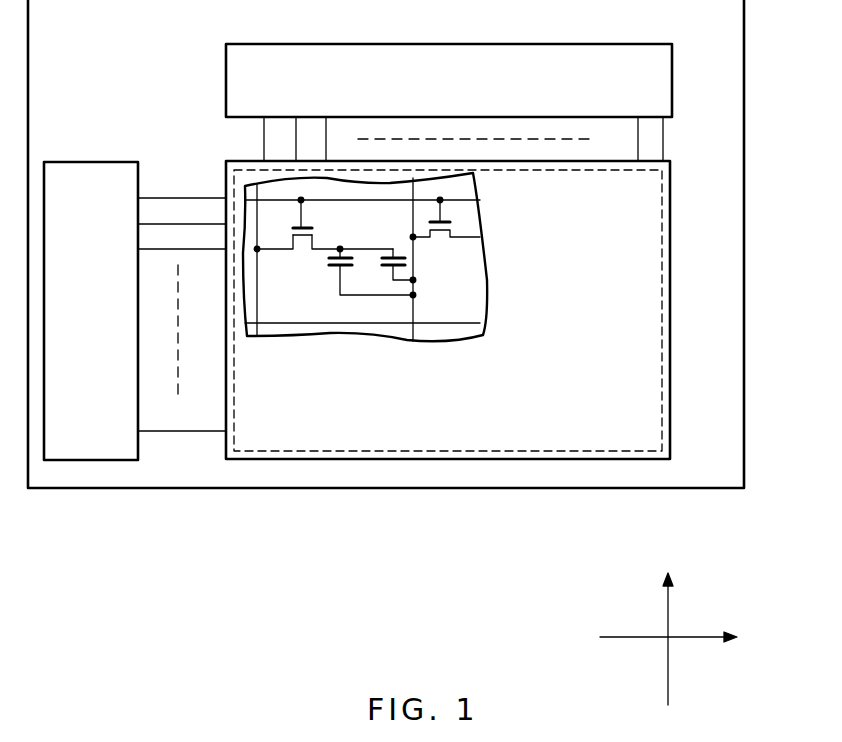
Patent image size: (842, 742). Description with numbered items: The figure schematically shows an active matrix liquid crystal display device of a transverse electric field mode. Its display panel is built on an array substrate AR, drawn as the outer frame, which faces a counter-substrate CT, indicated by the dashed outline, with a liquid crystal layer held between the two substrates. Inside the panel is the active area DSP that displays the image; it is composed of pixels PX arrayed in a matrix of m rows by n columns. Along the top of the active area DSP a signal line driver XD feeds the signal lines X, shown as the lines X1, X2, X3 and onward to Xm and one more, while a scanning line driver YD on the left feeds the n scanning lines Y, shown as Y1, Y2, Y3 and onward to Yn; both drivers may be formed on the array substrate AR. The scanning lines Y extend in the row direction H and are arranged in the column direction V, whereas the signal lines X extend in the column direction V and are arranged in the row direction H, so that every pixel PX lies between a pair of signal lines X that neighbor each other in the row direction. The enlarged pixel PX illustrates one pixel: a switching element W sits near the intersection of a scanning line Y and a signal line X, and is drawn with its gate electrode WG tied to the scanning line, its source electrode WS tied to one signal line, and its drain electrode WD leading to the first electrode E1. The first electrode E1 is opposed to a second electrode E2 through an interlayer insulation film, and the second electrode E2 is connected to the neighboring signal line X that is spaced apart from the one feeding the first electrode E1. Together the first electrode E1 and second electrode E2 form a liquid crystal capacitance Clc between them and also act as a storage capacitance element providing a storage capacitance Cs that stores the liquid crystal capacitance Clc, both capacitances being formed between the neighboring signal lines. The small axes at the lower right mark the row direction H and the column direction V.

The array substrate AR is at (648, 476).
The signal line driver XD is at (631, 58).
The scanning line driver YD is at (98, 162).
The active area DSP is at (493, 453).
The counter-substrate CT is at (670, 259).
The signal line X1 is at (263, 153).
The signal line X2 is at (295, 153).
The signal line X3 is at (325, 153).
The signal line Xm is at (636, 155).
The scanning line Y1 is at (190, 196).
The scanning line Y2 is at (190, 222).
The scanning line Y3 is at (190, 247).
The scanning line Yn is at (190, 430).
The pixel PX is at (323, 288).
The signal line X is at (258, 333).
The scanning line Y is at (455, 200).
The switching element W is at (325, 216).
The gate electrode WG is at (312, 206).
The source electrode WS is at (271, 247).
The drain electrode WD is at (325, 246).
The liquid crystal capacitance Clc is at (371, 277).
The storage capacitance Cs is at (406, 263).
The first electrode E1 is at (328, 259).
The second electrode E2 is at (328, 267).
The row direction H is at (677, 638).
The column direction V is at (667, 625).